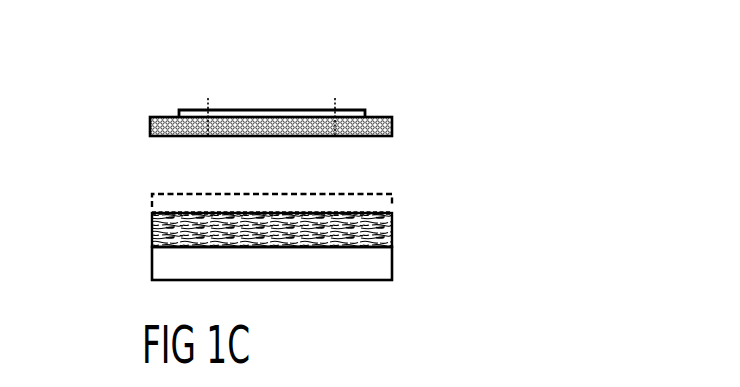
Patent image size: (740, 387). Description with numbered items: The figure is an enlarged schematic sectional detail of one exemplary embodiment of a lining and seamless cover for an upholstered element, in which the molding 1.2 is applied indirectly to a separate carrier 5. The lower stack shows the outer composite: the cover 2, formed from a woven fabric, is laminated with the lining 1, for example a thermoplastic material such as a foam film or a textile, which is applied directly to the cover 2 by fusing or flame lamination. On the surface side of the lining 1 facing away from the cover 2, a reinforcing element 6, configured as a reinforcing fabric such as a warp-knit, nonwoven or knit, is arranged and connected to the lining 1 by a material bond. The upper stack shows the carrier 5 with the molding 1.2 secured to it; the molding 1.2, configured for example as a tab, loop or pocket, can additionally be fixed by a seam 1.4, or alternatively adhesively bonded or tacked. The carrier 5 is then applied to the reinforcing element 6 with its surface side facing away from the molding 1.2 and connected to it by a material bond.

The lining 1 is at (391, 240).
The cover 2 is at (391, 270).
The carrier 5 is at (391, 128).
The reinforcing element 6 is at (391, 205).
The molding 1.2 is at (182, 115).
The seam 1.4 is at (335, 99).